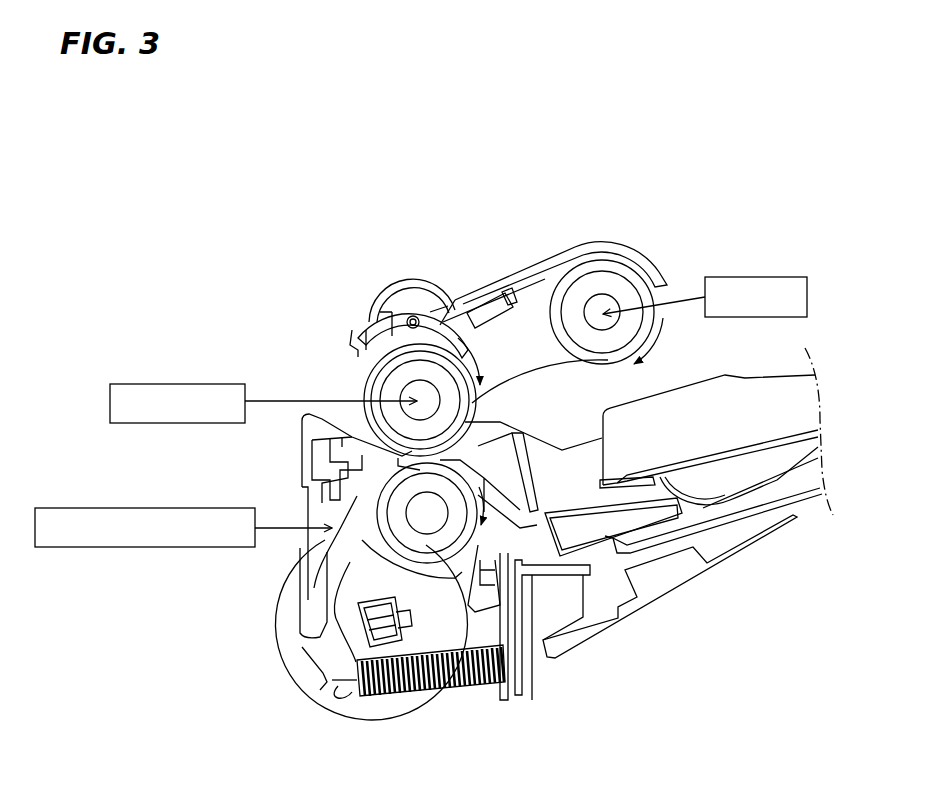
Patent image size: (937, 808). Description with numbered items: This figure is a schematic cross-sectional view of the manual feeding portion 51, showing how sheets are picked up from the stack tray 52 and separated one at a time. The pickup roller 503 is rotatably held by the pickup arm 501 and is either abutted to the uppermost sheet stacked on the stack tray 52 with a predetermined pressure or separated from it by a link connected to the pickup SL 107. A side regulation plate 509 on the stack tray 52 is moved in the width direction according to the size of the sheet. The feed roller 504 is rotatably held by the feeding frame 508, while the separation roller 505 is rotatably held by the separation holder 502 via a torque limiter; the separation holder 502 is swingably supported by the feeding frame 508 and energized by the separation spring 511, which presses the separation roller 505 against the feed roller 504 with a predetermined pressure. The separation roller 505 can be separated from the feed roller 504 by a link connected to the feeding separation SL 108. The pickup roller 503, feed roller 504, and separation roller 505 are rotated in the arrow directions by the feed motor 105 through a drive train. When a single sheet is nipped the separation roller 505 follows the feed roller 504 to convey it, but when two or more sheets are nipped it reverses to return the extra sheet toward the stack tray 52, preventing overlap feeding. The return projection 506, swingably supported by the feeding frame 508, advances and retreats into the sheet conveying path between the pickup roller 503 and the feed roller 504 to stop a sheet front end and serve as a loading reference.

The sheet feeding unit 51 is at (288, 316).
The stack tray 52 is at (733, 484).
The feed motor 105 is at (172, 383).
The pickup SL 107 is at (777, 277).
The feeding separation SL 108 is at (155, 548).
The pickup arm 501 is at (530, 297).
The separation holder 502 is at (357, 548).
The pickup roller 503 is at (622, 268).
The feed roller 504 is at (405, 335).
The separation roller 505 is at (450, 552).
The return projection 506 is at (528, 452).
The feeding frame 508 is at (310, 443).
The side regulation plate 509 is at (752, 392).
The separation spring 511 is at (377, 690).